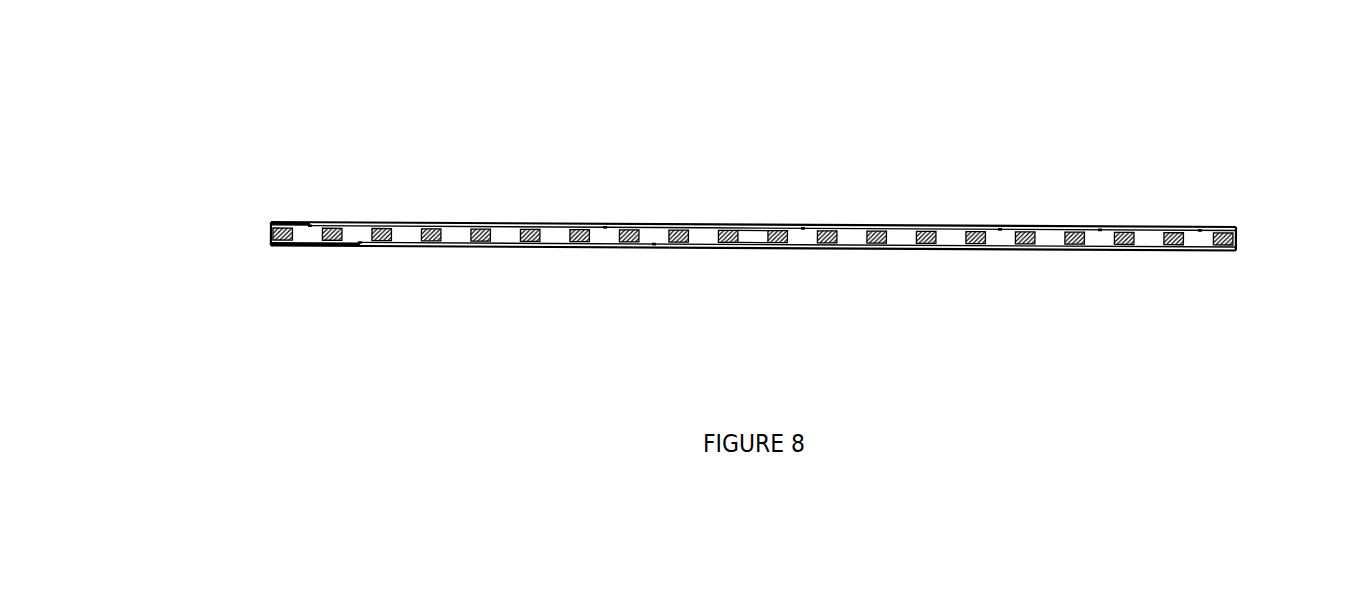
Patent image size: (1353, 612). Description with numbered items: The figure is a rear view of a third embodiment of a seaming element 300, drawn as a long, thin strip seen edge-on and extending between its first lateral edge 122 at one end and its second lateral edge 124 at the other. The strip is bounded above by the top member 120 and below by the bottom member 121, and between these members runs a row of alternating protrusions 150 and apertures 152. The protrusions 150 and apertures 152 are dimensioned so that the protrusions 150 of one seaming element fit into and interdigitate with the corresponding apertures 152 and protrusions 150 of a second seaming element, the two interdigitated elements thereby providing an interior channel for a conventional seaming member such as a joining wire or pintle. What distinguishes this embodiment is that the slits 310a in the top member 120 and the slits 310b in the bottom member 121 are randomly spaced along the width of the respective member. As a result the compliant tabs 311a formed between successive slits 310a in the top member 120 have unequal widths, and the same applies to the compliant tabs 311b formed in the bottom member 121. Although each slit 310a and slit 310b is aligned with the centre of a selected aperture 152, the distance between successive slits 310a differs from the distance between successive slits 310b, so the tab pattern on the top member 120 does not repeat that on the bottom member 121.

The seaming element 300 is at (473, 110).
The top member 120 is at (753, 184).
The bottom member 121 is at (752, 286).
The first lateral edge 122 is at (233, 234).
The second lateral edge 124 is at (1272, 240).
The protrusions 150 is at (753, 187).
The apertures 152 is at (788, 278).
The slits 310a is at (519, 179).
The slits 310b is at (578, 283).
The compliant tabs 311a is at (970, 183).
The compliant tabs 311b is at (1017, 288).